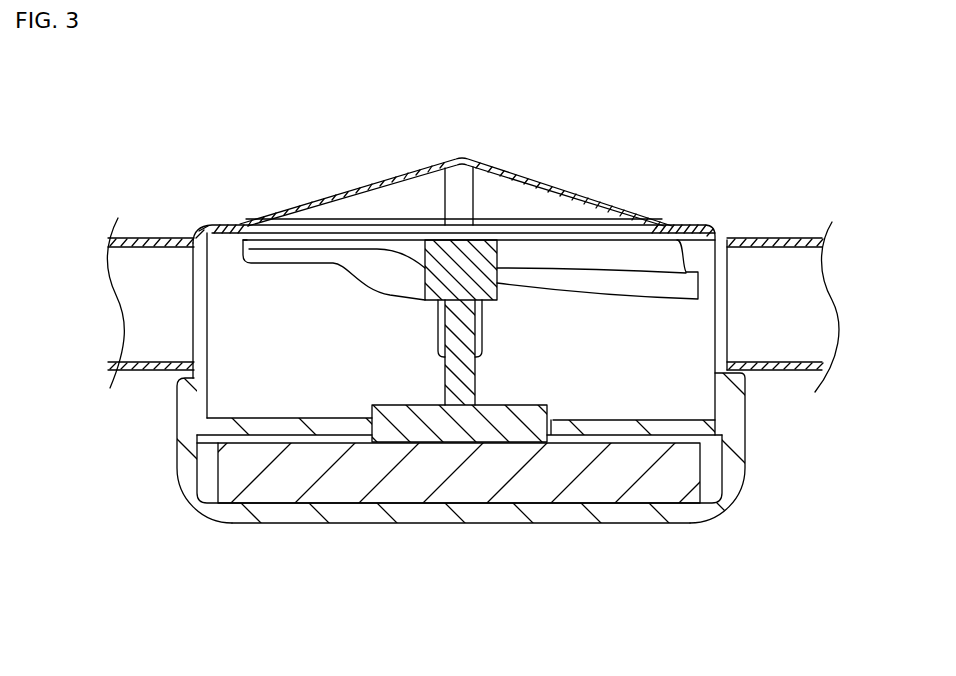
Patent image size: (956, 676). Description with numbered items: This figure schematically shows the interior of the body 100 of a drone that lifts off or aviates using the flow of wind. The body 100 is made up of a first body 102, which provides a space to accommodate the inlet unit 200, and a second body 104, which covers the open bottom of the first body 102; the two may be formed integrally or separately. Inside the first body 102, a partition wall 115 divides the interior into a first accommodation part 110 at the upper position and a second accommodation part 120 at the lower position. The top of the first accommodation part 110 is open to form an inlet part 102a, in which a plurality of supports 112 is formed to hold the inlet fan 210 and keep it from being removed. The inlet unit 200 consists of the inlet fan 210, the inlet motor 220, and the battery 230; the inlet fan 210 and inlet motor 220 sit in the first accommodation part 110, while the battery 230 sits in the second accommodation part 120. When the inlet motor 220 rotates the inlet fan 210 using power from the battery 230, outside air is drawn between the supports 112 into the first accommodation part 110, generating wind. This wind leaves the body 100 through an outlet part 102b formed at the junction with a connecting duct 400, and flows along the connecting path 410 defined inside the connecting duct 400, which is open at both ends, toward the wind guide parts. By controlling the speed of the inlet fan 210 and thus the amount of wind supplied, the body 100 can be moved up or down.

The body 100 is at (232, 560).
The first body 102 is at (210, 225).
The inlet part 102a is at (411, 194).
The outlet part 102b is at (722, 300).
The second body 104 is at (437, 518).
The first accommodation part 110 is at (297, 360).
The supports 112 is at (370, 185).
The partition wall 115 is at (330, 427).
The second accommodation part 120 is at (207, 458).
The inlet unit 200 is at (500, 238).
The inlet fan 210 is at (287, 258).
The inlet motor 220 is at (520, 418).
The battery 230 is at (543, 477).
The connecting duct 400 is at (150, 225).
The connecting path 410 is at (143, 291).